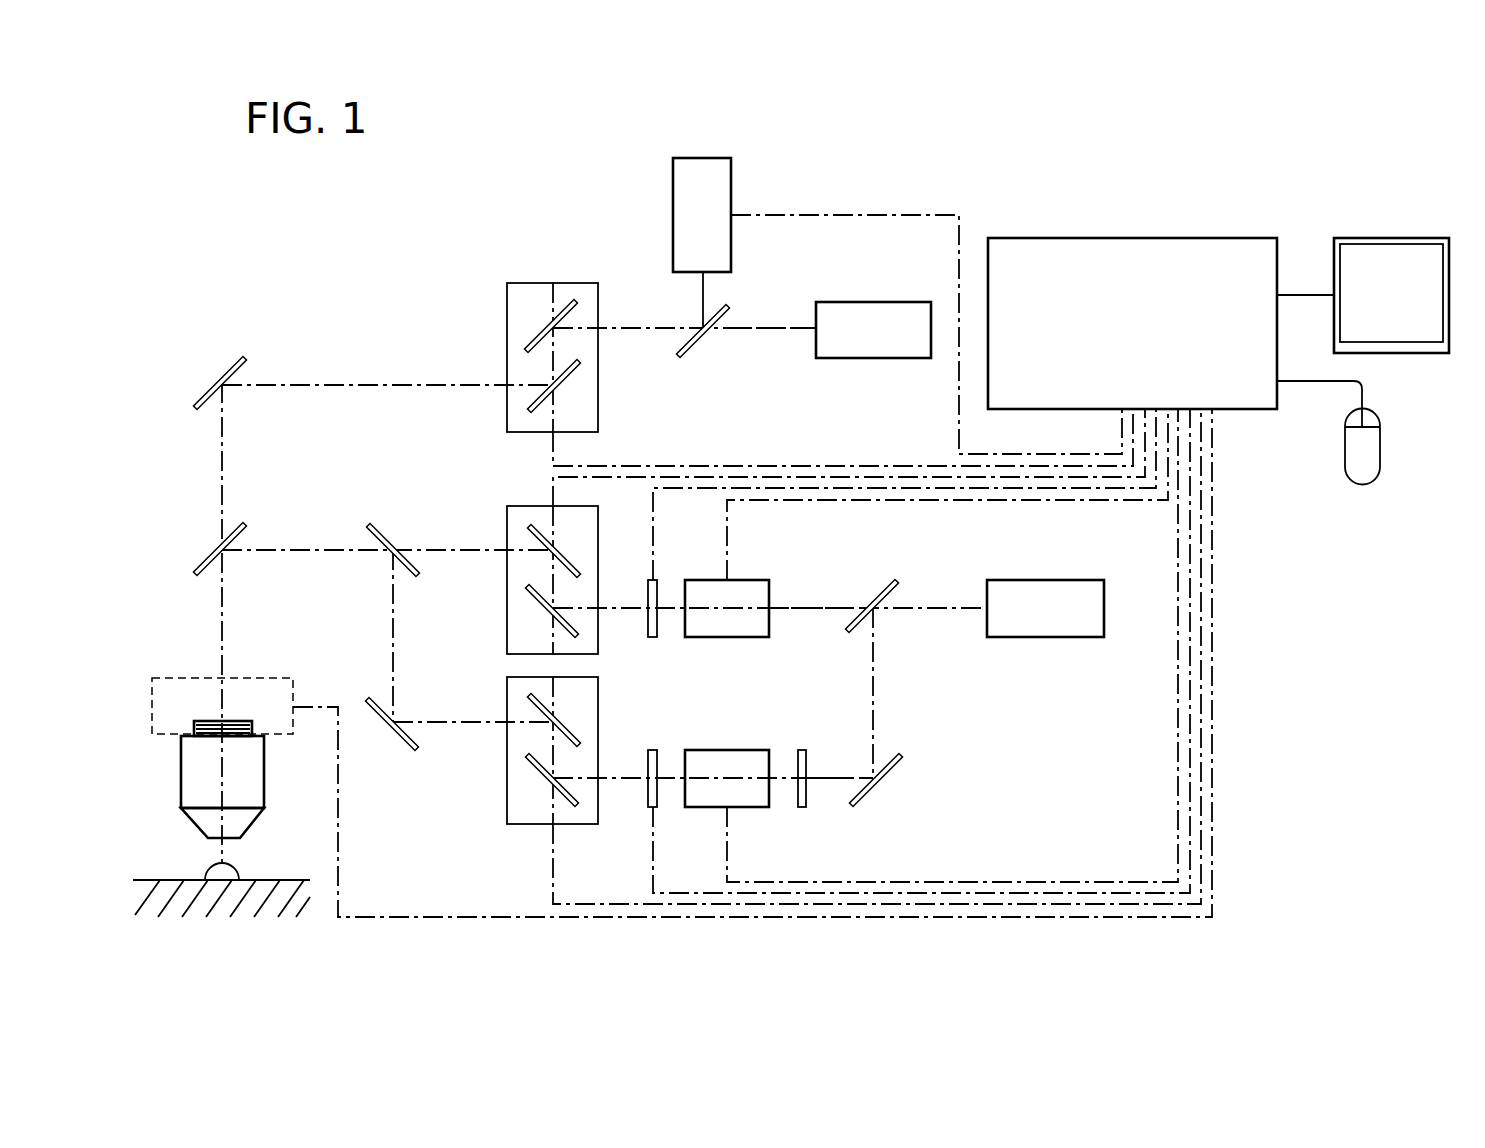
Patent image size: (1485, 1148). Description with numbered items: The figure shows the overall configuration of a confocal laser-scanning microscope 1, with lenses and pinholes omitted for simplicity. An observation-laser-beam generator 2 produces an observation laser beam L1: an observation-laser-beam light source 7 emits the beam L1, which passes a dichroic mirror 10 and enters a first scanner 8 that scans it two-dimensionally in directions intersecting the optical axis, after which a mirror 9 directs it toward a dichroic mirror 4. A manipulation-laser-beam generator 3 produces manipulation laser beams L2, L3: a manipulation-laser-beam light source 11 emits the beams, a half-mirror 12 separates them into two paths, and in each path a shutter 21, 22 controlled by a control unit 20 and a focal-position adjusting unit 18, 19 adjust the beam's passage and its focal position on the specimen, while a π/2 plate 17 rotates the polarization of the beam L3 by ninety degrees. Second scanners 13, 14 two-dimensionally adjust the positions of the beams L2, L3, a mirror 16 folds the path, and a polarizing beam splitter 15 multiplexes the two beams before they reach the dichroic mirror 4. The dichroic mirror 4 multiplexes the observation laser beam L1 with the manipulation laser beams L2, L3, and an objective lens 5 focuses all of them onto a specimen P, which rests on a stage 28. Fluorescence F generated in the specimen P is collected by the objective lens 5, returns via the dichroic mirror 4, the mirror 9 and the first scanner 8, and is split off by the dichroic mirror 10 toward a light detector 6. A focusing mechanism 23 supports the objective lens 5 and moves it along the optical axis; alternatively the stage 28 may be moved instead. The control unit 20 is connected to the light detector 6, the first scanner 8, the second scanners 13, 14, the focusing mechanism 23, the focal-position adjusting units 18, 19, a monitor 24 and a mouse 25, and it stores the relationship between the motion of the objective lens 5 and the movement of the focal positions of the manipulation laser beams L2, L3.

The laser-scanning microscope 1 is at (1058, 170).
The observation-laser-beam generator 2 is at (490, 240).
The manipulation-laser-beam generator 3 is at (982, 728).
The dichroic mirror 4 is at (210, 547).
The objective lens 5 is at (181, 776).
The light detector 6 is at (673, 192).
The observation-laser-beam light source 7 is at (878, 302).
The first scanner 8 is at (507, 312).
The mirror 9 is at (227, 362).
The dichroic mirror 10 is at (678, 357).
The manipulation-laser-beam light source 11 is at (1062, 637).
The half-mirror 12 is at (877, 581).
The second scanner 13 is at (507, 622).
The second scanner 14 is at (507, 790).
The polarizing beam splitter 15 is at (386, 525).
The mirror 16 is at (388, 740).
The π/2 plate 17 is at (806, 800).
The focal-position adjusting unit 18 is at (769, 593).
The focal-position adjusting unit 19 is at (728, 750).
The control unit 20 is at (1155, 238).
The shutter 21 is at (658, 592).
The shutter 22 is at (654, 750).
The focusing mechanism 23 is at (183, 678).
The monitor 24 is at (1376, 238).
The mouse 25 is at (1382, 445).
The stage 28 is at (170, 880).
The fluorescence F is at (703, 302).
The observation laser beam L1 is at (770, 331).
The manipulation laser beam L2 is at (810, 612).
The manipulation laser beam L3 is at (832, 778).
The specimen P is at (240, 870).